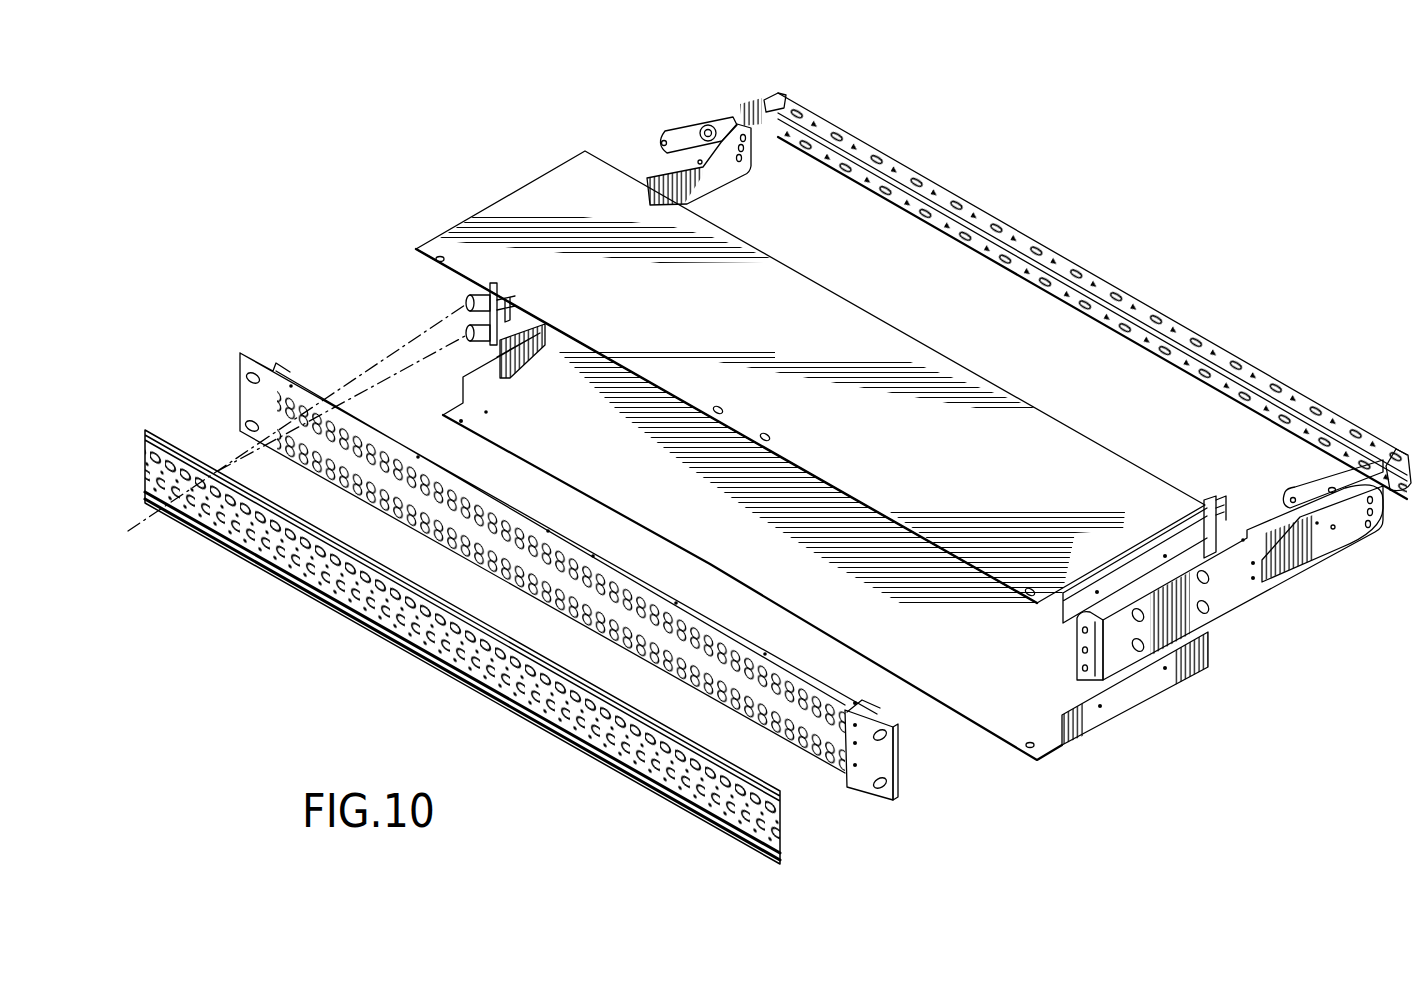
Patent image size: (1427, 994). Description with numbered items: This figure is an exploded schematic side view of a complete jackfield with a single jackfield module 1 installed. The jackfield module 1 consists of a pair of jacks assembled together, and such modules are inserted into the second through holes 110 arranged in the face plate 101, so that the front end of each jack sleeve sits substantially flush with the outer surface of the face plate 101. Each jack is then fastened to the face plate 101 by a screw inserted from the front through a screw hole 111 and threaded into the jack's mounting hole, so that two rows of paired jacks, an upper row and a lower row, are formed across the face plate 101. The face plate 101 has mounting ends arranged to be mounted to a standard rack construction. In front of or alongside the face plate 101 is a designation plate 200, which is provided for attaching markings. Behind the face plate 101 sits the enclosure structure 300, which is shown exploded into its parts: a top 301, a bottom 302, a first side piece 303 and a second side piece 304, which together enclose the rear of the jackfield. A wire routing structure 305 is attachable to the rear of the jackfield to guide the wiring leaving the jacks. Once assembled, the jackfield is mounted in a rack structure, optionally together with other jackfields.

The jackfield module 1 is at (463, 291).
The face plate 101 is at (608, 561).
The second through holes 110 is at (910, 748).
The screw hole 111 is at (847, 712).
The designation plate 200 is at (162, 431).
The enclosure structure 300 is at (913, 438).
The top 301 is at (547, 195).
The bottom 302 is at (1013, 707).
The first side piece 303 is at (1228, 590).
The second side piece 304 is at (657, 172).
The wire routing structure 305 is at (1037, 250).